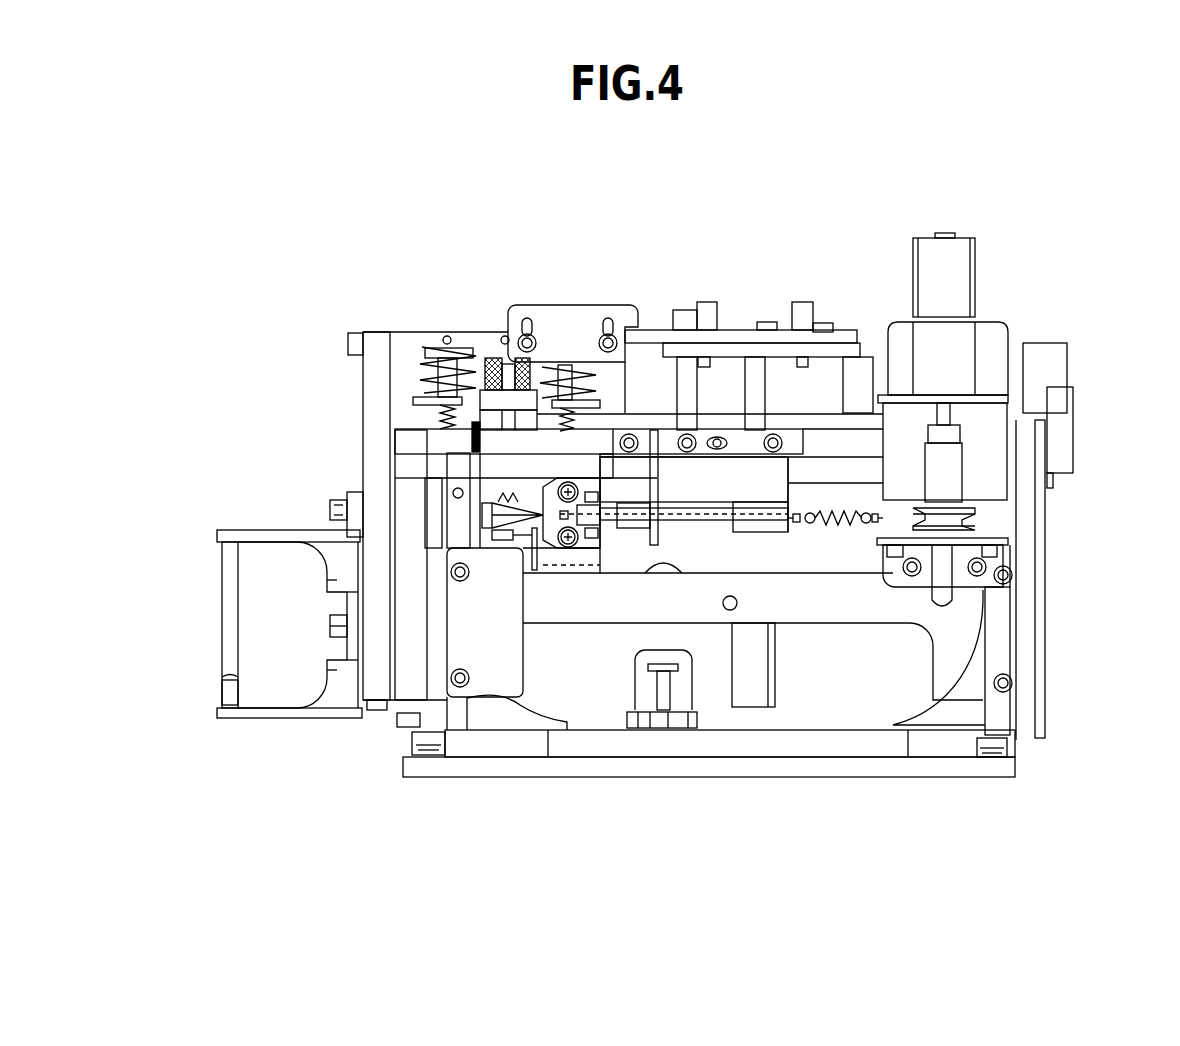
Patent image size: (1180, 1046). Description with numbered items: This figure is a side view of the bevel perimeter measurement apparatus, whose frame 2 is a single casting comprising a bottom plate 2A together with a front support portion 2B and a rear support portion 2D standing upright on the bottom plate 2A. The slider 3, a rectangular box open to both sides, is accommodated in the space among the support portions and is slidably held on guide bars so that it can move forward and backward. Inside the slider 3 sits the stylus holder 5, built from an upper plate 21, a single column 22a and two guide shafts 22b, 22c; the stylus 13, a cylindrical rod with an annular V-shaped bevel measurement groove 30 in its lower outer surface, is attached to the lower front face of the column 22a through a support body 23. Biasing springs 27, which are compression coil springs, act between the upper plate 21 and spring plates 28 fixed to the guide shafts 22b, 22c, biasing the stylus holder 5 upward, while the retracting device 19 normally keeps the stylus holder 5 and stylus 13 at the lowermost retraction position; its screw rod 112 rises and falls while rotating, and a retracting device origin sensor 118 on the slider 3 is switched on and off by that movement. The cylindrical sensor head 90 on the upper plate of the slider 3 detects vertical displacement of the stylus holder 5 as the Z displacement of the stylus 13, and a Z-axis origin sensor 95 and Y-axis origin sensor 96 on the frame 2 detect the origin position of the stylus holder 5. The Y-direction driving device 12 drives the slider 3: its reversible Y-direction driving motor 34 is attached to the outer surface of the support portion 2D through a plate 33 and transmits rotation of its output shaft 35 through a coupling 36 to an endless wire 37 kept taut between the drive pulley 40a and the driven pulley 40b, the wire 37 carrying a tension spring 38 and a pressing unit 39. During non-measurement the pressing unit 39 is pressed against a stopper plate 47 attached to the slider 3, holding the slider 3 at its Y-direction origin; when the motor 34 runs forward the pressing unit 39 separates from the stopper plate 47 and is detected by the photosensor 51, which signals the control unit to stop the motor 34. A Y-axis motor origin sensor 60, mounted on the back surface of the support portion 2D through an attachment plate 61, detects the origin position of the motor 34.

The frame 2 is at (758, 790).
The bottom plate 2A is at (833, 773).
The support portion 2B is at (455, 713).
The support portion 2D is at (1013, 714).
The slider 3 is at (800, 678).
The stylus holder 5 is at (340, 445).
The Y-direction driving device 12 is at (925, 218).
The stylus 13 is at (257, 594).
The retracting device 19 is at (676, 690).
The upper plate 21 is at (413, 342).
The column 22a is at (372, 414).
The guide shaft 22b is at (435, 375).
The guide shaft 22c is at (567, 367).
The support body 23 is at (263, 537).
The biasing spring 27 is at (438, 357).
The spring plate 28 is at (413, 398).
The bevel measurement groove 30 is at (220, 680).
The plate 33 is at (1000, 330).
The Y-direction driving motor 34 is at (975, 275).
The output shaft 35 is at (950, 413).
The coupling 36 is at (952, 466).
The wire 37 is at (723, 517).
The spring 38 is at (830, 527).
The pressing unit 39 is at (632, 532).
The pulley 40a is at (968, 520).
The pulley 40b is at (500, 520).
The stopper plate 47 is at (660, 527).
The photosensor 51 is at (547, 548).
The Y-axis motor origin sensor 60 is at (1075, 448).
The attachment plate 61 is at (1048, 545).
The sensor head 90 is at (497, 350).
The Z-axis origin sensor 95 is at (642, 335).
The Y-axis origin sensor 96 is at (858, 378).
The screw rod 112 is at (657, 689).
The retracting device origin sensor 118 is at (647, 730).